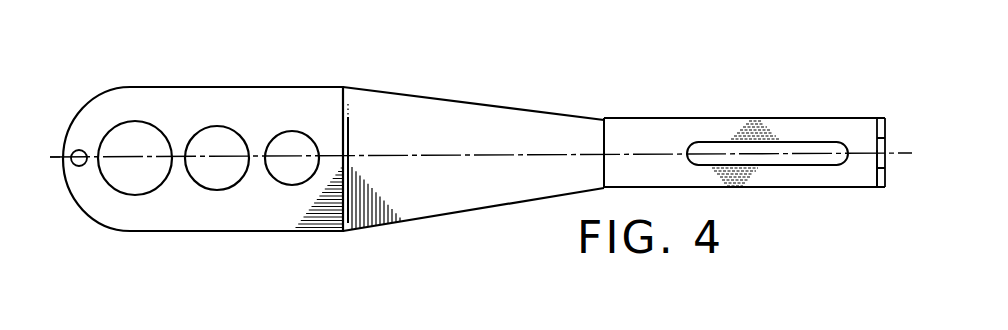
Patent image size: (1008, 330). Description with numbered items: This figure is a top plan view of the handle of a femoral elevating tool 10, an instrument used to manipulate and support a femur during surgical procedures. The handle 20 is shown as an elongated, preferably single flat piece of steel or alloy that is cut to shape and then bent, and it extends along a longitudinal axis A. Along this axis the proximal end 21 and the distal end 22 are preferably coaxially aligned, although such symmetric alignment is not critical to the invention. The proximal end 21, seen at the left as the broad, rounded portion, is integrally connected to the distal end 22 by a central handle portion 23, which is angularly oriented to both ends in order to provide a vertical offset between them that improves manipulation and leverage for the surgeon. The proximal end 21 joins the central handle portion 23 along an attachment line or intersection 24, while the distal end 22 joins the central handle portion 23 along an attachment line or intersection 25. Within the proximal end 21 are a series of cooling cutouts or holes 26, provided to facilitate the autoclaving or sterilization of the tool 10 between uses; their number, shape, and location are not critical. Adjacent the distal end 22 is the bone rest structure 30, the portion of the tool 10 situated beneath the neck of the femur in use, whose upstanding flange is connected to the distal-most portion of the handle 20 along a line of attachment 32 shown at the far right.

The femoral elevating tool 10 is at (543, 97).
The handle 20 is at (344, 141).
The proximal end 21 is at (158, 98).
The distal end 22 is at (788, 125).
The central handle portion 23 is at (505, 120).
The attachment line or intersection 24 is at (345, 97).
The attachment line or intersection 25 is at (604, 143).
The cooling cutouts or holes 26 is at (268, 181).
The bone rest structure 30 is at (867, 174).
The line of attachment 32 is at (878, 133).
The longitudinal axis A is at (55, 157).